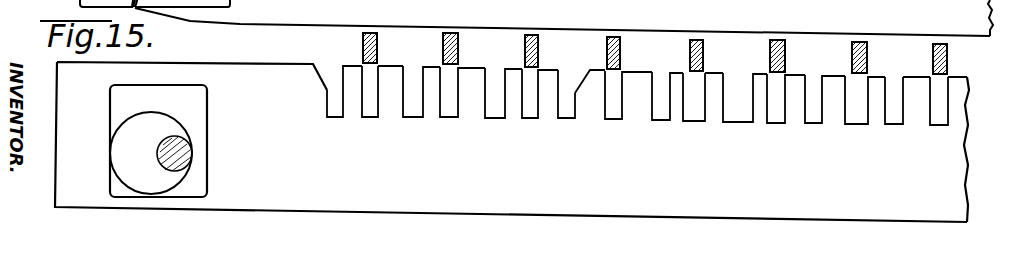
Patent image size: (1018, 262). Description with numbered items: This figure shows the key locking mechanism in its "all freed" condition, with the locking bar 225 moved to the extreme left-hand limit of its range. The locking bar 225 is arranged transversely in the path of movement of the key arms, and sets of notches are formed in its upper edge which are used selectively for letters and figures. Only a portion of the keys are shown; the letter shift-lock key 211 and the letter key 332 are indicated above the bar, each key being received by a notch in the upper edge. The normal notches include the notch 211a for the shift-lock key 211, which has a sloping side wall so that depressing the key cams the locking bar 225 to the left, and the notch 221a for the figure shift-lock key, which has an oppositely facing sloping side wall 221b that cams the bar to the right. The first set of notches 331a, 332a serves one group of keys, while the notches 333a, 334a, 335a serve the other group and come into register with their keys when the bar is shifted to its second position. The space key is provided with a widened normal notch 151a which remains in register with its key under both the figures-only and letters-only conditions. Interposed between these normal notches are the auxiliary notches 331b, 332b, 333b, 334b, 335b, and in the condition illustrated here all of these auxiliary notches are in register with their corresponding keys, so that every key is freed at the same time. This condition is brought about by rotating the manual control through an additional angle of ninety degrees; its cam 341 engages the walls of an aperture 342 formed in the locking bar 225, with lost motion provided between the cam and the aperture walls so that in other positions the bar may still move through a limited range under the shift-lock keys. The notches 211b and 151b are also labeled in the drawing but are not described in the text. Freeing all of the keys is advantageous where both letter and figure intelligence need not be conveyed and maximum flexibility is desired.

The locking bar 225 is at (274, 15).
The letter shift-lock key 211 is at (362, 48).
The notch 211a is at (327, 105).
The slot 211b is at (367, 113).
The notch 333a is at (415, 114).
The auxiliary notch 333b is at (455, 113).
The notch 334a is at (497, 115).
The auxiliary notch 334b is at (532, 115).
The notch 221a is at (565, 115).
The sloping side wall 221b is at (613, 119).
The notch 335a is at (662, 118).
The auxiliary notch 335b is at (695, 119).
The widened normal notch 151a is at (742, 120).
The slot 151b is at (777, 121).
The notch 331a is at (813, 121).
The auxiliary notch 331b is at (858, 122).
The notch 332a is at (897, 123).
The auxiliary notch 332b is at (940, 123).
The letter key 332 is at (947, 60).
The aperture 342 is at (200, 109).
The cam 341 is at (158, 182).